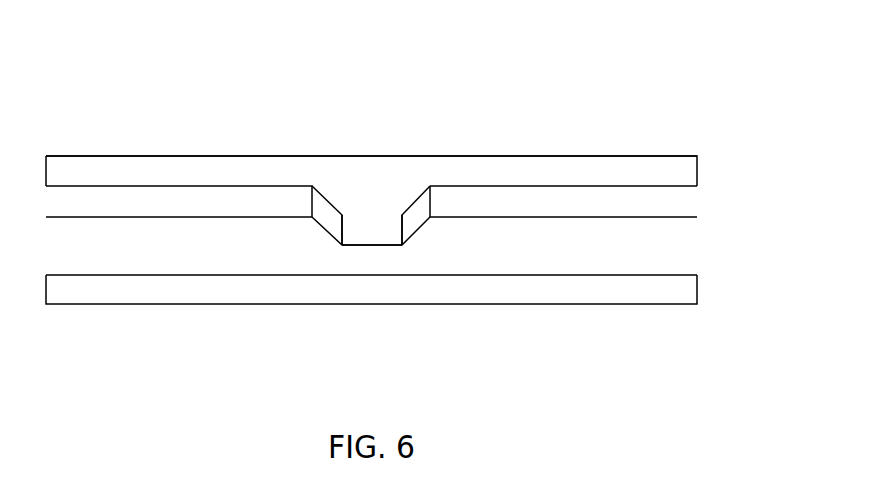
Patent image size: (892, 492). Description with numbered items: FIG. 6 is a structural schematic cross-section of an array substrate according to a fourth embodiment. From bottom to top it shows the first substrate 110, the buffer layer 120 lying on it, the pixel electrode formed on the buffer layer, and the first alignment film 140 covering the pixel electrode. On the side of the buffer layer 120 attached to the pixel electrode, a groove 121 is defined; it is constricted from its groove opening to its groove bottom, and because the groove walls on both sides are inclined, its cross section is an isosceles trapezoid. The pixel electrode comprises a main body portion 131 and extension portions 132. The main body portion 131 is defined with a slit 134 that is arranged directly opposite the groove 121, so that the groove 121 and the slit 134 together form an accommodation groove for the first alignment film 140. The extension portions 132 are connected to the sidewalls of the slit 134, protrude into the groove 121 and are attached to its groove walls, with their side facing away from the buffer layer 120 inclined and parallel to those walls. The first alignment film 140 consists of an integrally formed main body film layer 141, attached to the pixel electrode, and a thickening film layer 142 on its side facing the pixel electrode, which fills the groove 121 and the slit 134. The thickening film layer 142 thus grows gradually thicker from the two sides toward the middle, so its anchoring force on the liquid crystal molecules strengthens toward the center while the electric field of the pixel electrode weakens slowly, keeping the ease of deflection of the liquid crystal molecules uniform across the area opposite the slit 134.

The first substrate 110 is at (105, 304).
The buffer layer 120 is at (310, 275).
The groove 121 is at (385, 234).
The main body portion 131 is at (225, 187).
The extension portion 132 is at (327, 194).
The slit 134 is at (353, 202).
The first alignment film 140 is at (543, 75).
The main body film layer 141 is at (430, 157).
The thickening film layer 142 is at (372, 218).